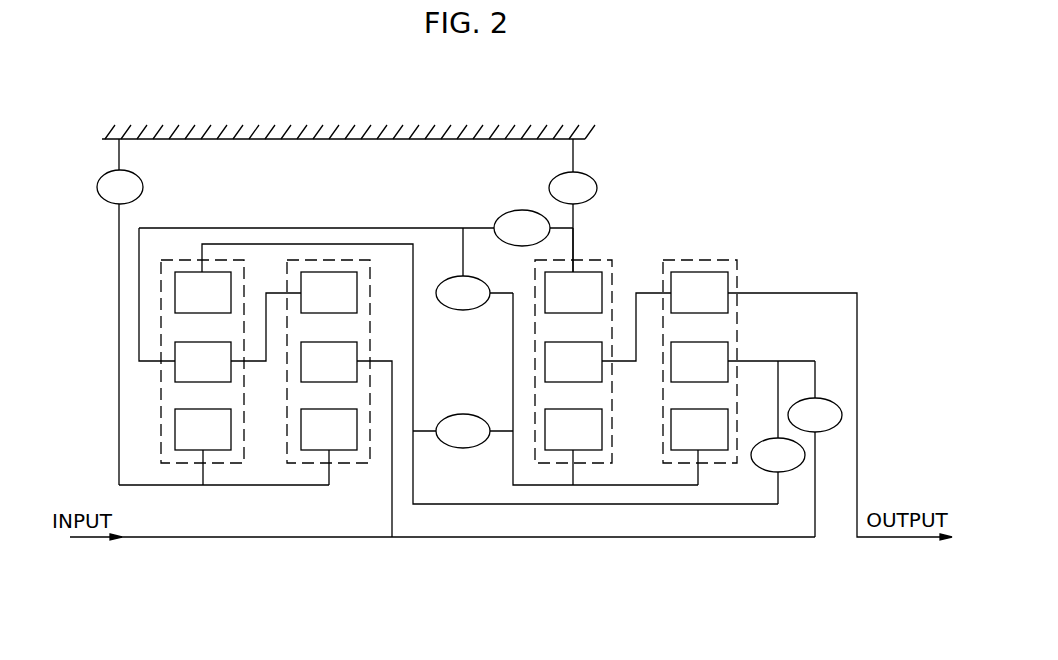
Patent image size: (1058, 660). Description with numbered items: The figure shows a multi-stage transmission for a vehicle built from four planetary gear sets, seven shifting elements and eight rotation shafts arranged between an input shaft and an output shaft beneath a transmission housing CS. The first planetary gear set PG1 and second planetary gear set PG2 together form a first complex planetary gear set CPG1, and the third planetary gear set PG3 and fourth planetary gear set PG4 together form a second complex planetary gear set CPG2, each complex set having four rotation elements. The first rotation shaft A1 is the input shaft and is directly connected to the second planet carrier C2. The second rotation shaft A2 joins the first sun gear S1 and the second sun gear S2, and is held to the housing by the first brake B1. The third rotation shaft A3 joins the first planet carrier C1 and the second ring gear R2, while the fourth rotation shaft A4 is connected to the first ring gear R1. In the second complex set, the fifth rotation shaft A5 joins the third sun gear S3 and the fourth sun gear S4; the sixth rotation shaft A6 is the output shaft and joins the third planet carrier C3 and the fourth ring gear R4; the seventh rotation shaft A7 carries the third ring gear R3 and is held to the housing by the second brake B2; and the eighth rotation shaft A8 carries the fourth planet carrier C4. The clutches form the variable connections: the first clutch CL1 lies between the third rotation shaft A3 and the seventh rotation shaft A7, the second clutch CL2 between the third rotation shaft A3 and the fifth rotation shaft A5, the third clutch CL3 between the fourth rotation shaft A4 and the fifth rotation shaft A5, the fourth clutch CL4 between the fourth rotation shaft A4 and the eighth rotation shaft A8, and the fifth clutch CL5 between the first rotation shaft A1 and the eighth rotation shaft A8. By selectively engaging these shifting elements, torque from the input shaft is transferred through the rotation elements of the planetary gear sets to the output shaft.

The transmission housing CS is at (263, 130).
The first brake B1 is at (120, 312).
The second brake B2 is at (573, 205).
The first clutch CL1 is at (522, 228).
The second clutch CL2 is at (474, 269).
The third clutch CL3 is at (463, 431).
The fourth clutch CL4 is at (778, 455).
The fifth clutch CL5 is at (815, 415).
The first rotation shaft A1 is at (363, 540).
The second rotation shaft A2 is at (119, 317).
The third rotation shaft A3 is at (327, 227).
The fourth rotation shaft A4 is at (252, 243).
The fifth rotation shaft A5 is at (538, 487).
The sixth rotation shaft A6 is at (810, 291).
The seventh rotation shaft A7 is at (592, 241).
The eighth rotation shaft A8 is at (794, 360).
The first planetary gear set PG1 is at (204, 396).
The second planetary gear set PG2 is at (329, 396).
The third planetary gear set PG3 is at (573, 419).
The fourth planetary gear set PG4 is at (697, 419).
The first complex planetary gear set CPG1 is at (233, 538).
The second complex planetary gear set CPG2 is at (676, 578).
The first ring gear R1 is at (203, 292).
The second ring gear R2 is at (329, 292).
The third ring gear R3 is at (573, 292).
The fourth ring gear R4 is at (699, 292).
The first planet carrier C1 is at (203, 362).
The second planet carrier C2 is at (329, 362).
The third planet carrier C3 is at (573, 362).
The fourth planet carrier C4 is at (699, 362).
The first sun gear S1 is at (203, 429).
The second sun gear S2 is at (329, 429).
The third sun gear S3 is at (573, 429).
The fourth sun gear S4 is at (699, 429).